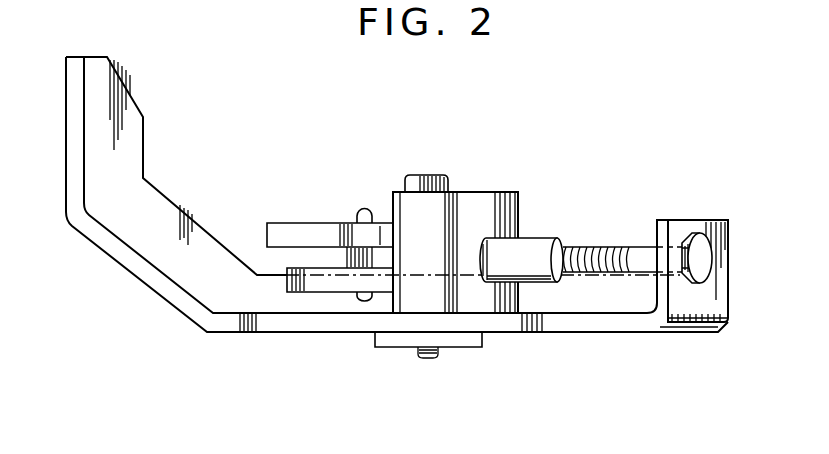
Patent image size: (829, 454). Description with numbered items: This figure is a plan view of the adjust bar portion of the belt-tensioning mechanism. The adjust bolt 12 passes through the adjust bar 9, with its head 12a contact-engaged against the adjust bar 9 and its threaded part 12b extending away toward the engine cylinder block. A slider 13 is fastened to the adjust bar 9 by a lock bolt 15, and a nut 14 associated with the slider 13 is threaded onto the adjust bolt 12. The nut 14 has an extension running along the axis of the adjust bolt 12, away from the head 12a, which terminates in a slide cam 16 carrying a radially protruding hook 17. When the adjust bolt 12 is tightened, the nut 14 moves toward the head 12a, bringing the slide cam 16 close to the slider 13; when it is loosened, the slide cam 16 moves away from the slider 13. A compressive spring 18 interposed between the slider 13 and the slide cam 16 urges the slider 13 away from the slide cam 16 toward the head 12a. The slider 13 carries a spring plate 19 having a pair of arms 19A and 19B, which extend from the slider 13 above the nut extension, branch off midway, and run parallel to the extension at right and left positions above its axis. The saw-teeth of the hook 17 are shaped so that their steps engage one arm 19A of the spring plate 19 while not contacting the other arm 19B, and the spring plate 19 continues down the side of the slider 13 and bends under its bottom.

The adjust bar 9 is at (555, 322).
The adjust bolt 12 is at (668, 238).
The head 12a is at (703, 258).
The threaded part 12b is at (574, 250).
The slider 13 is at (492, 210).
The nut 14 is at (541, 243).
The lock bolt 15 is at (431, 175).
The slide cam 16 is at (352, 268).
The hook 17 is at (365, 212).
The compressive spring 18 is at (382, 245).
The spring plate 19 is at (317, 279).
The arm 19A is at (283, 232).
The arm 19B is at (297, 290).